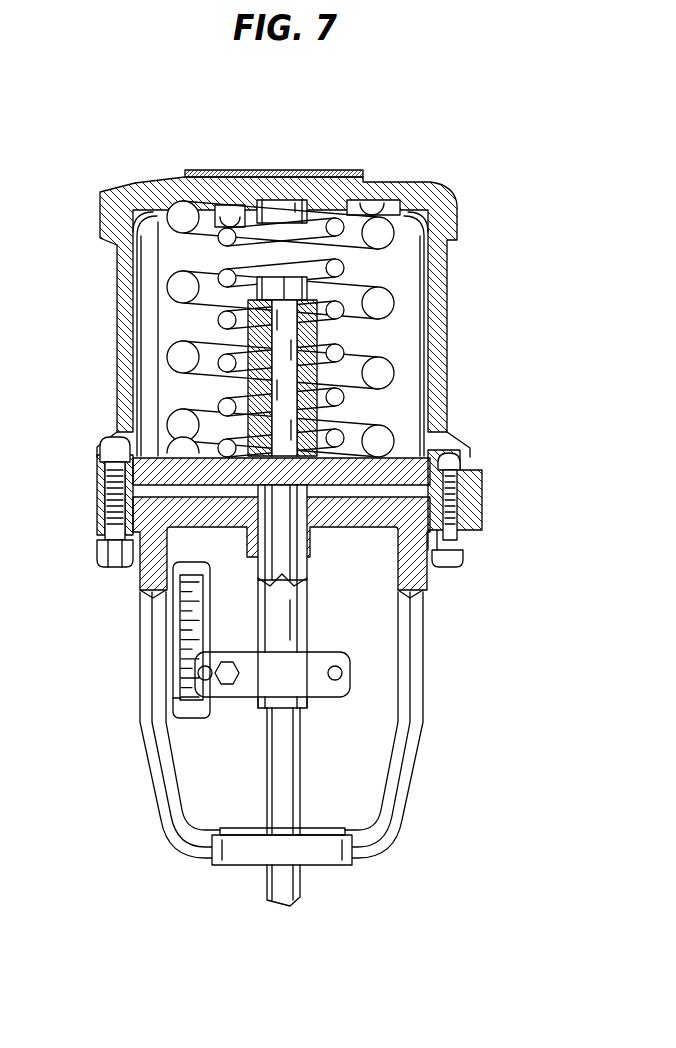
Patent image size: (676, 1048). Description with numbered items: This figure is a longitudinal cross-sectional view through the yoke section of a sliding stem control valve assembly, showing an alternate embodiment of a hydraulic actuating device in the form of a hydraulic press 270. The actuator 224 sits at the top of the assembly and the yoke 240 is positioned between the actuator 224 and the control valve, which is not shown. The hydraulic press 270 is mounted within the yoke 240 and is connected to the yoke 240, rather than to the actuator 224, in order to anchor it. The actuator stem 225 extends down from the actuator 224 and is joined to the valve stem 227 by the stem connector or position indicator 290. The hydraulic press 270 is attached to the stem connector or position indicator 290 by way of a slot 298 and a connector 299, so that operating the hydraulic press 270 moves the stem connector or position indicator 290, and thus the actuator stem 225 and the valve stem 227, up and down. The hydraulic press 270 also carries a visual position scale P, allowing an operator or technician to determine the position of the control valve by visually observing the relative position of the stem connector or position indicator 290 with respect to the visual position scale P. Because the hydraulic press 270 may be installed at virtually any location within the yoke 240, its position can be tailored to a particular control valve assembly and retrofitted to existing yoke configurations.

The actuator 224 is at (466, 179).
The actuator stem 225 is at (290, 603).
The valve stem 227 is at (284, 803).
The yoke 240 is at (425, 586).
The hydraulic press 270 is at (150, 574).
The stem connector or position indicator 290 is at (327, 698).
The slot 298 is at (205, 626).
The connector 299 is at (193, 668).
The visual position scale P is at (173, 699).